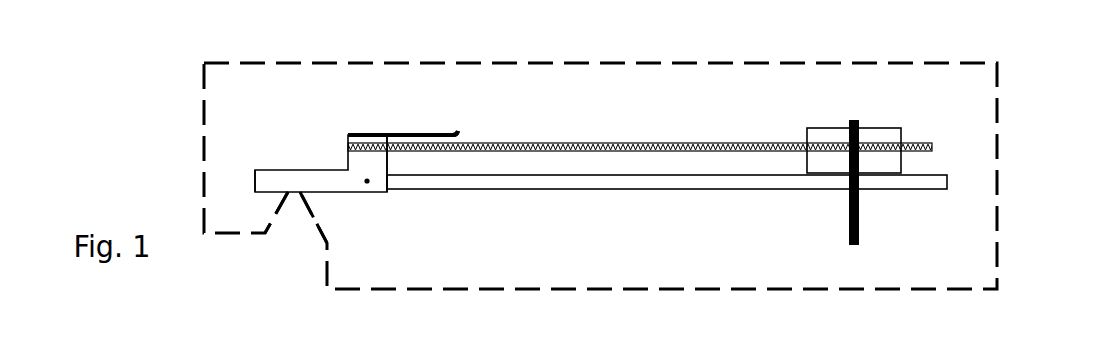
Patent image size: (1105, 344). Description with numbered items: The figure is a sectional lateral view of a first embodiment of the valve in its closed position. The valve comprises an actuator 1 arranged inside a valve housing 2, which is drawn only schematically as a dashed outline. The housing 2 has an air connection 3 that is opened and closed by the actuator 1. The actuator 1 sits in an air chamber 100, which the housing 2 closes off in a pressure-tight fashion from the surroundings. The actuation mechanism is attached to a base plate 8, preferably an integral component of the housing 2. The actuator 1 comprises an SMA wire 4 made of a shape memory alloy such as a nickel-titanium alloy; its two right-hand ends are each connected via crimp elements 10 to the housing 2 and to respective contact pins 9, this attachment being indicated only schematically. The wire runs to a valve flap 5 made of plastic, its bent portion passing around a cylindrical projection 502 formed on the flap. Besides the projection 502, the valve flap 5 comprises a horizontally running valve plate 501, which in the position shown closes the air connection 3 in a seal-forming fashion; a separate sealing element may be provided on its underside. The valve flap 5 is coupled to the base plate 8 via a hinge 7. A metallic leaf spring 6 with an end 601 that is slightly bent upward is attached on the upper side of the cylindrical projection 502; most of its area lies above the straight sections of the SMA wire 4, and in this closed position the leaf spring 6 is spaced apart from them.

The air chamber 100 is at (707, 103).
The actuator 1 is at (630, 122).
The valve housing 2 is at (997, 157).
The air connection 3 is at (297, 222).
The SMA wire 4 is at (529, 136).
The valve flap 5 is at (297, 161).
The valve plate 501 is at (265, 170).
The cylindrical projection 502 is at (377, 163).
The leaf spring 6 is at (361, 124).
The end of leaf spring 601 is at (456, 132).
The hinge 7 is at (367, 184).
The base plate 8 is at (660, 189).
The contact pin 9 is at (859, 220).
The crimp element 10 is at (888, 128).